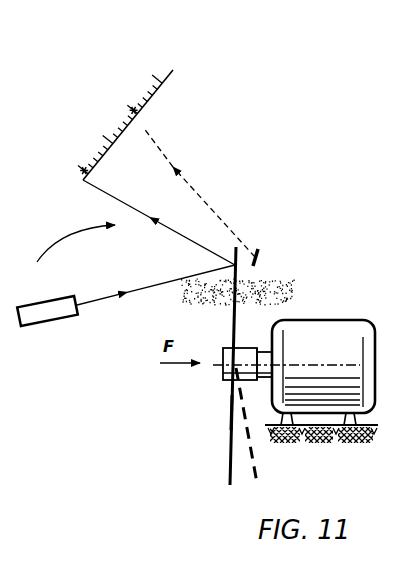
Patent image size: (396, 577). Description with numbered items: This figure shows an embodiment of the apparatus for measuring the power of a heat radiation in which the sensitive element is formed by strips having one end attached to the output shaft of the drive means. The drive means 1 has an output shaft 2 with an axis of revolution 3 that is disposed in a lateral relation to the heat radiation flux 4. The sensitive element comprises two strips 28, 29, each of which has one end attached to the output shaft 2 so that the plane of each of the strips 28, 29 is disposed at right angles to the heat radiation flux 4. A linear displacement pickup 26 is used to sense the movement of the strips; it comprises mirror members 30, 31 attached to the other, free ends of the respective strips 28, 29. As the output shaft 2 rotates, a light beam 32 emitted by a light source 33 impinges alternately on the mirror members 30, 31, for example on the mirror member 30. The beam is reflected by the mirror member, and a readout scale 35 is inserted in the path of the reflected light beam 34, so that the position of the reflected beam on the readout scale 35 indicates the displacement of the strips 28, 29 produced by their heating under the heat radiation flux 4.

The motor 1 is at (322, 328).
The output shaft 2 is at (253, 378).
The axis of revolution 3 is at (258, 348).
The heat radiation flux 4 is at (263, 288).
The linear displacement pickup 26 is at (76, 238).
The strip 28 is at (233, 313).
The strip 29 is at (233, 403).
The mirror member 30 is at (233, 257).
The mirror member 31 is at (230, 472).
The light beam 32 is at (142, 288).
The light source 33 is at (60, 310).
The reflected light beam 34 is at (141, 207).
The readout scale 35 is at (143, 107).